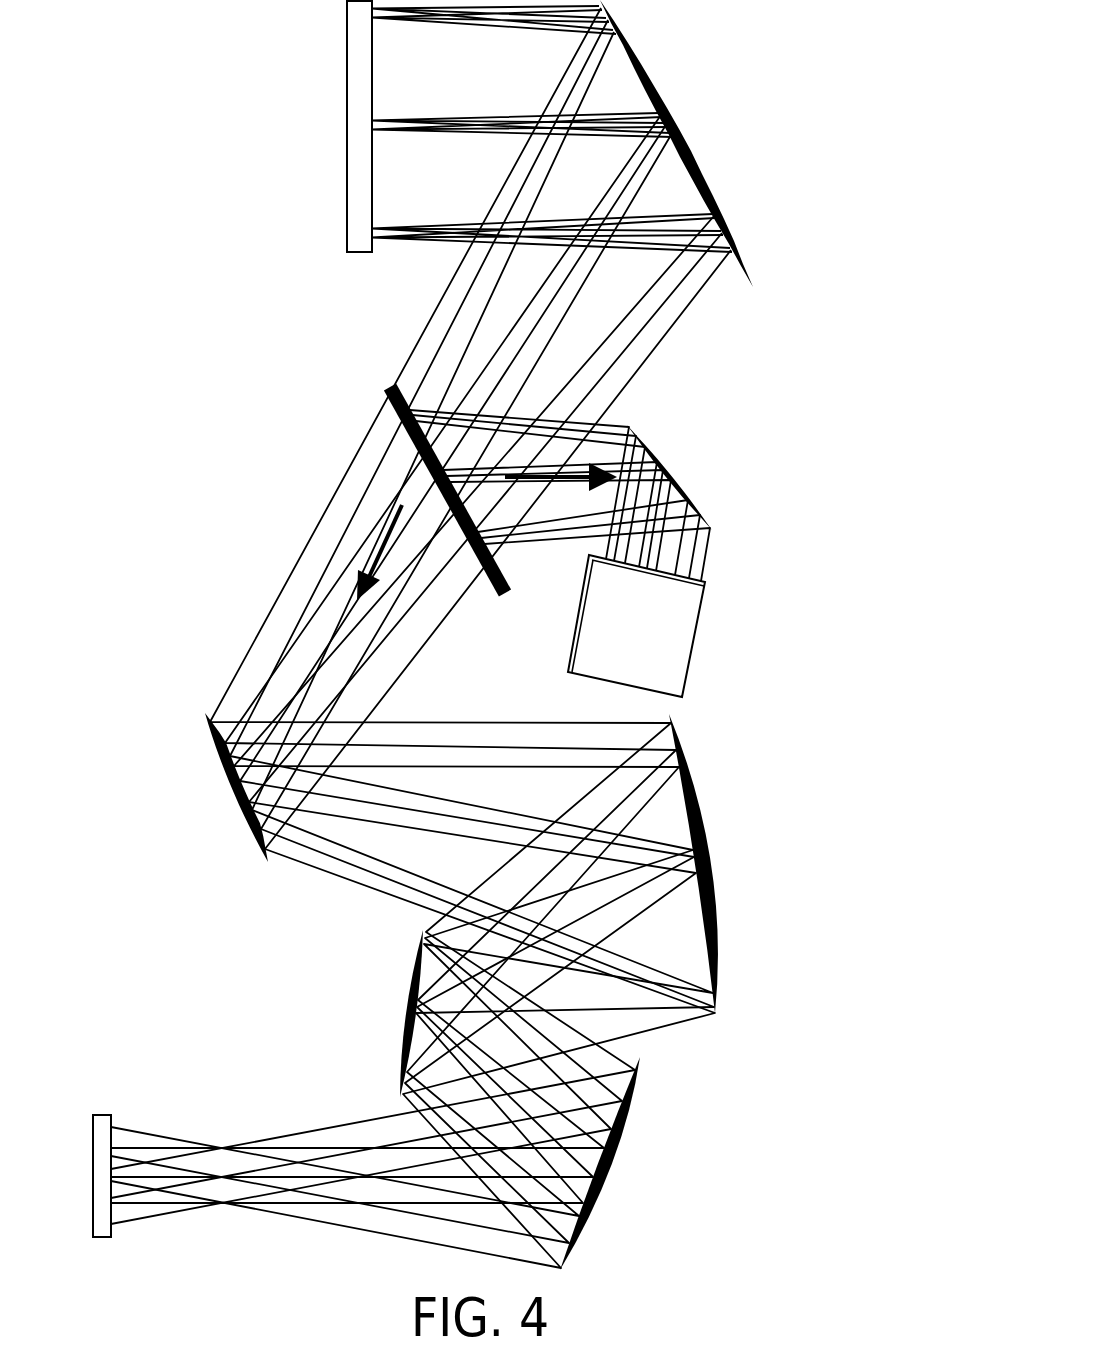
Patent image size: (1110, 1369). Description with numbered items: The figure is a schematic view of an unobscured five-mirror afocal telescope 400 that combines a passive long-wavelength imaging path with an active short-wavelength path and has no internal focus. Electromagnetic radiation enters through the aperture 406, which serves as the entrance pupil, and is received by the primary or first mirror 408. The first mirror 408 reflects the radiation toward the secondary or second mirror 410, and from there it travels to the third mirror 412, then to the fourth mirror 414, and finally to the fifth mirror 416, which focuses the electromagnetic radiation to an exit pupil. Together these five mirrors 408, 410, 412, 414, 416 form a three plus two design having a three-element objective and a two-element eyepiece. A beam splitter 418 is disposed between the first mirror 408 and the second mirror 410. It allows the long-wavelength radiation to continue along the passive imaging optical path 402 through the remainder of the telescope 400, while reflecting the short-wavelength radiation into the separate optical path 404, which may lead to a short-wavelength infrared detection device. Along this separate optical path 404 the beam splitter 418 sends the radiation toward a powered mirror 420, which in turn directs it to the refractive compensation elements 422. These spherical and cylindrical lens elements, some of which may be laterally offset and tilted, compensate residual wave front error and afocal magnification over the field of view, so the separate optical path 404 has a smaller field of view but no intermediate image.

The unobscured five-mirror afocal telescope 400 is at (260, 58).
The passive imaging optical path 402 is at (385, 548).
The separate optical path 404 is at (600, 430).
The aperture 406 is at (338, 112).
The first mirror 408 is at (674, 125).
The second mirror 410 is at (229, 771).
The third mirror 412 is at (713, 890).
The fourth mirror 414 is at (415, 982).
The fifth mirror 416 is at (630, 1107).
The beam splitter 418 is at (403, 436).
The powered mirror 420 is at (680, 488).
The refractive compensation elements 422 is at (655, 637).